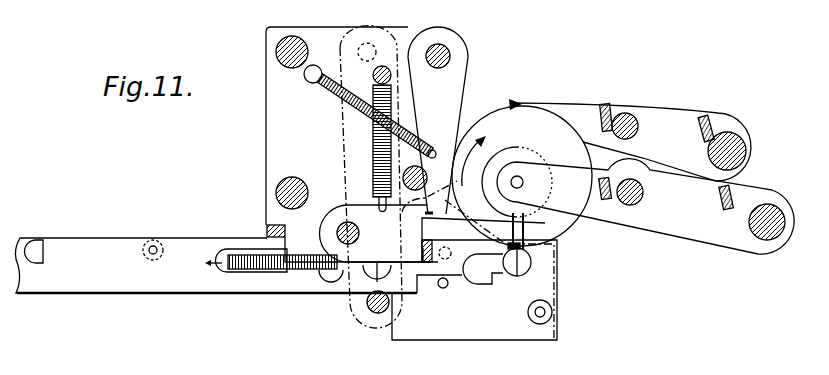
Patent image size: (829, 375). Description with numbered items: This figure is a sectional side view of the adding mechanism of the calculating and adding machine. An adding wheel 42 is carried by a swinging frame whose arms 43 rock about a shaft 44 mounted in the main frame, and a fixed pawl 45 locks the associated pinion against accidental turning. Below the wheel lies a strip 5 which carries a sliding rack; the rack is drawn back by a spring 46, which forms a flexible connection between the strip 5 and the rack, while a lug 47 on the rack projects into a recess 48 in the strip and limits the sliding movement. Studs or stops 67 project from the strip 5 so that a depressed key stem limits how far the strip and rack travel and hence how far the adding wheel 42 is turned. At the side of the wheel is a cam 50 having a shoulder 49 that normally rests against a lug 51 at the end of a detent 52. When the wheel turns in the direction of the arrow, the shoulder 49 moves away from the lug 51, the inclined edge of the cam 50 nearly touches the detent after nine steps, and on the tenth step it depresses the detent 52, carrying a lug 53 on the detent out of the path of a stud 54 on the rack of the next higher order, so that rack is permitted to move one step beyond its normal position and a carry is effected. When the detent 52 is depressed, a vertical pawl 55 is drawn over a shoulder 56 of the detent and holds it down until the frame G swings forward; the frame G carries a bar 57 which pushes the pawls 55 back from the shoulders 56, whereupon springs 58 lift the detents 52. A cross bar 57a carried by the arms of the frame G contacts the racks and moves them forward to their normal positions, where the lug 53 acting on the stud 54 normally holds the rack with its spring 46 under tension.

The strip 5 is at (130, 283).
The adding wheel 42 is at (566, 231).
The arm 43 is at (666, 199).
The shaft 44 is at (764, 238).
The fixed pawl 45 is at (567, 110).
The spring 46 is at (249, 273).
The lug 47 is at (441, 288).
The recess 48 is at (463, 280).
The shoulder 49 is at (523, 219).
The cam 50 is at (517, 150).
The lug 51 is at (523, 241).
The detent 52 is at (483, 228).
The lug 53 is at (423, 248).
The stud 54 is at (452, 255).
The vertical pawl 55 is at (453, 86).
The shoulder 56 is at (427, 215).
The bar 57 is at (408, 178).
The cross bar 57a is at (367, 308).
The spring 58 is at (347, 123).
The stop 67 is at (143, 250).
The frame G is at (433, 182).